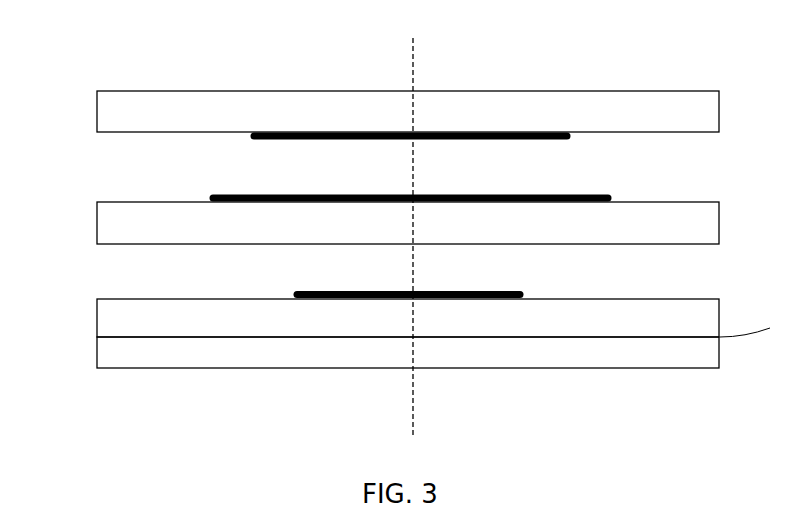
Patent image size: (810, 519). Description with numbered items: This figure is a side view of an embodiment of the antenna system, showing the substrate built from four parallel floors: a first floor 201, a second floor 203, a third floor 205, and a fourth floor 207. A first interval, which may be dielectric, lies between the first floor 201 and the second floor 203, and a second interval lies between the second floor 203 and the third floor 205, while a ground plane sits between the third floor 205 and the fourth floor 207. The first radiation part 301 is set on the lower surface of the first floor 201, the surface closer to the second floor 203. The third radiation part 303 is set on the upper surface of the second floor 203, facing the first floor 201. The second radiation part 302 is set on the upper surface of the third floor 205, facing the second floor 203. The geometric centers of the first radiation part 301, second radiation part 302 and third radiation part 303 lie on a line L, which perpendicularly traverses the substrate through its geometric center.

The line L is at (423, 68).
The first floor 201 is at (697, 107).
The second floor 203 is at (697, 218).
The third floor 205 is at (697, 317).
The fourth floor 207 is at (697, 357).
The first radiation part 301 is at (254, 136).
The second radiation part 302 is at (305, 301).
The third radiation part 303 is at (253, 202).